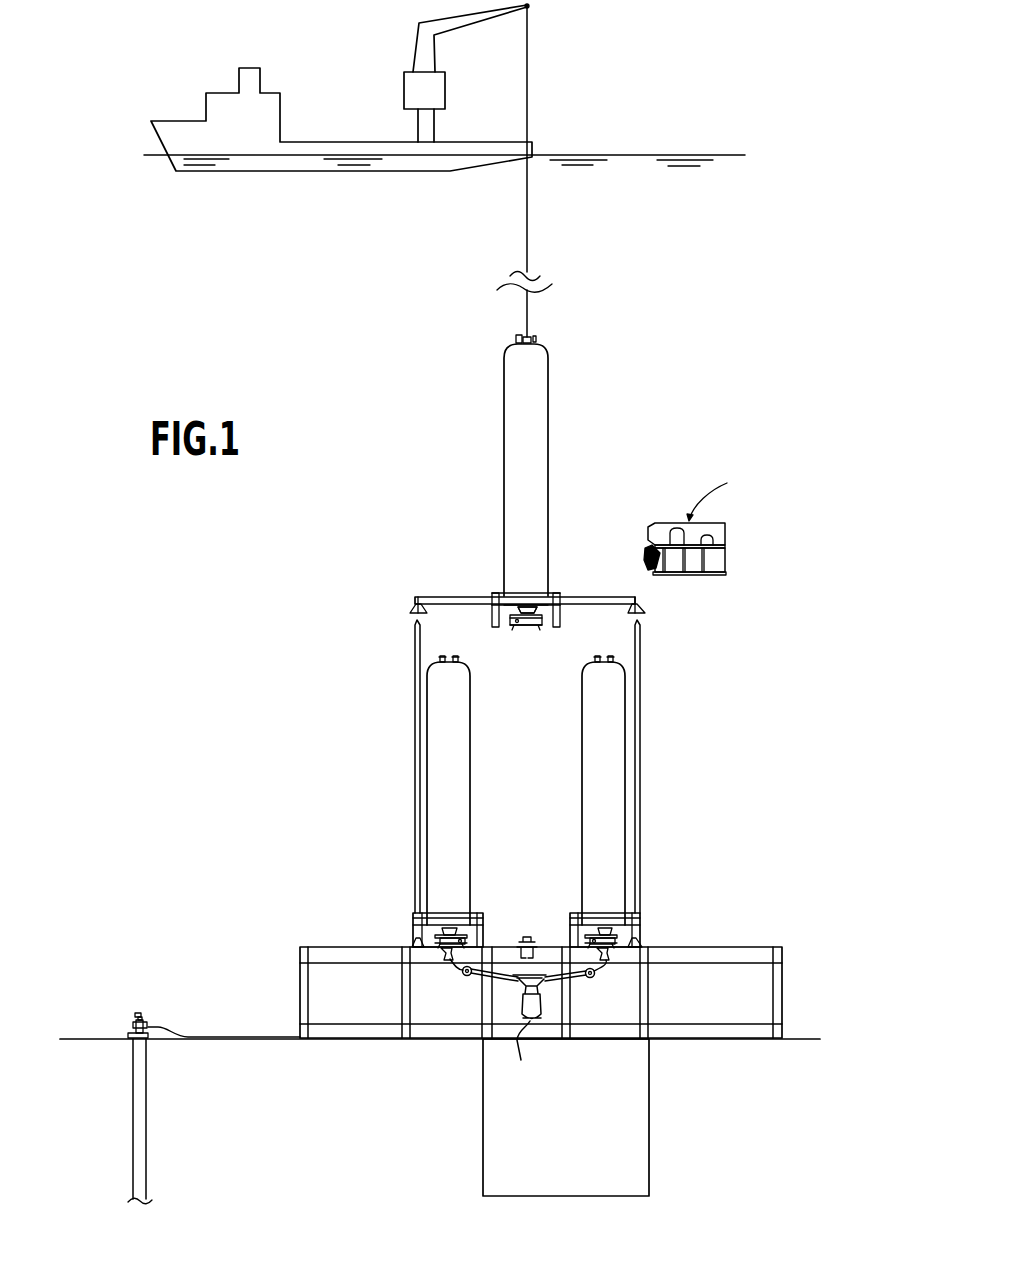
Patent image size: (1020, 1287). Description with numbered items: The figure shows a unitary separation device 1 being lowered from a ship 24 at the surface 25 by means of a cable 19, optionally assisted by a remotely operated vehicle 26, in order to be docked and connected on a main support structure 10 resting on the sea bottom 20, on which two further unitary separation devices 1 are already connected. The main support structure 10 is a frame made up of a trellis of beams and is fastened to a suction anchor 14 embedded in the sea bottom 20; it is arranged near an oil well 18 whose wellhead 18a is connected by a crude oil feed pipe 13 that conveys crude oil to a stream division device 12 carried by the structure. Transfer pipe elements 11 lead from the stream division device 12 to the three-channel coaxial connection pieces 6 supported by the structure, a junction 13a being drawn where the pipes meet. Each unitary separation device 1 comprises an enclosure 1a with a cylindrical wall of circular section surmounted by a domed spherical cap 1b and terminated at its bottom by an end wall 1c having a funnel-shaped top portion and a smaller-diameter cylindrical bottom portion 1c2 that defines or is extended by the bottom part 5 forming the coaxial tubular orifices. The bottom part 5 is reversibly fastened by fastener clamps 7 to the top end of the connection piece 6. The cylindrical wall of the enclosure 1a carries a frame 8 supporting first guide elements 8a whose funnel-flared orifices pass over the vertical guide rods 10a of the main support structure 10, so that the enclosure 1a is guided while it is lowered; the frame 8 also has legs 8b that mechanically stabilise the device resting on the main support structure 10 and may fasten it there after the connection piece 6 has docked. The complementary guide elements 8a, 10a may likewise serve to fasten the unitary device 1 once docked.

The unitary separation device 1 is at (526, 618).
The enclosure 1a is at (548, 397).
The spherical cap 1b is at (530, 337).
The end wall 1c is at (523, 600).
The cylindrical bottom portion of end wall 1c2 is at (527, 610).
The bottom part 5 is at (530, 628).
The three-channel coaxial connection piece 6 is at (447, 962).
The fastener clamps 7 is at (520, 626).
The frame 8 is at (583, 597).
The first guide elements 8a is at (412, 607).
The legs 8b is at (560, 622).
The main support structure 10 is at (755, 948).
The vertical guide rods 10a is at (415, 770).
The transfer pipe elements 11 is at (498, 983).
The stream division device 12 is at (533, 1015).
The crude oil feed pipe 13 is at (518, 1044).
The pipe connection 13a is at (471, 967).
The suction anchor 14 is at (638, 1150).
The oil well 18 is at (138, 1103).
The wellhead 18a is at (138, 1012).
The cable 19 is at (527, 62).
The sea bottom 20 is at (812, 1038).
The ship 24 is at (229, 108).
The surface 25 is at (641, 155).
The remotely operated vehicle 26 is at (668, 527).